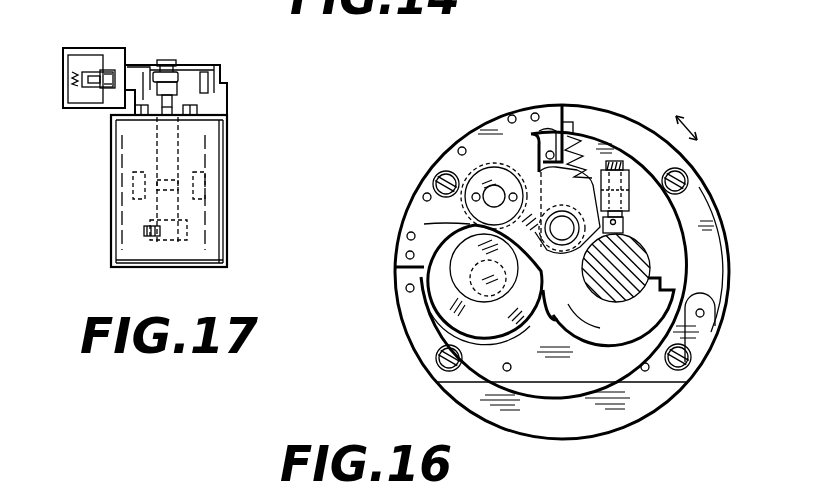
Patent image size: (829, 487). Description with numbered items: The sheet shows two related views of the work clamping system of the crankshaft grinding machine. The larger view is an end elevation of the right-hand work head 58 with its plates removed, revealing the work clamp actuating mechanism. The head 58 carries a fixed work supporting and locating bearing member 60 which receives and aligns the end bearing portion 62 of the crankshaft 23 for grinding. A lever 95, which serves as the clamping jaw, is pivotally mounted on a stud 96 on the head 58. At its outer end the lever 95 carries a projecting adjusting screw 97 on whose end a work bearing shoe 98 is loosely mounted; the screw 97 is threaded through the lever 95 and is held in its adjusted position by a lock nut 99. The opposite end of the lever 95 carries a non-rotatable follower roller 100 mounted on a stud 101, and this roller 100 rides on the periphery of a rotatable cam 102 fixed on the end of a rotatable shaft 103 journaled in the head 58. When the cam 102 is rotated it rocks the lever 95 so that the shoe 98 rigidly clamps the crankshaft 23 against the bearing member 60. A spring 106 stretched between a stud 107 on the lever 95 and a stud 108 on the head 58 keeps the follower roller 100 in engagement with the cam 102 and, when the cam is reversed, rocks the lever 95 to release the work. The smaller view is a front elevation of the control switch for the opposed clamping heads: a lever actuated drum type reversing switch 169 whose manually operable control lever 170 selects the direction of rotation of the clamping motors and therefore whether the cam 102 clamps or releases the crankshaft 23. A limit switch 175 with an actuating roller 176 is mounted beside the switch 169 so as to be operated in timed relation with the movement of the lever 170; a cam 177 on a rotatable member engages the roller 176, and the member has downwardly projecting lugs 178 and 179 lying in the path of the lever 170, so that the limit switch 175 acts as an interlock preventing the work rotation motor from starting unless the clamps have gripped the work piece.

In FIG. 17, the reversing switch 169 is at (122, 237).
In FIG. 17, the control lever 170 is at (180, 85).
In FIG. 17, the limit switch 175 is at (63, 65).
In FIG. 17, the actuating roller 176 is at (93, 80).
In FIG. 17, the cam 177 is at (130, 64).
In FIG. 17, the lug 178 is at (143, 100).
In FIG. 17, the lug 179 is at (208, 93).
In FIG. 16, the work head 58 is at (615, 412).
In FIG. 16, the bearing member 60 is at (618, 318).
In FIG. 16, the end bearing portion 62 is at (650, 248).
In FIG. 16, the crankshaft 23 is at (638, 273).
In FIG. 16, the lever 95 is at (629, 185).
In FIG. 16, the stud 96 is at (560, 240).
In FIG. 16, the adjusting screw 97 is at (632, 212).
In FIG. 16, the work bearing shoe 98 is at (623, 228).
In FIG. 16, the lock nut 99 is at (620, 165).
In FIG. 16, the follower roller 100 is at (476, 157).
In FIG. 16, the stud 101 is at (496, 194).
In FIG. 16, the cam 102 is at (470, 262).
In FIG. 16, the shaft 103 is at (472, 283).
In FIG. 16, the spring 106 is at (597, 133).
In FIG. 16, the stud 107 is at (628, 191).
In FIG. 16, the stud 108 is at (567, 122).